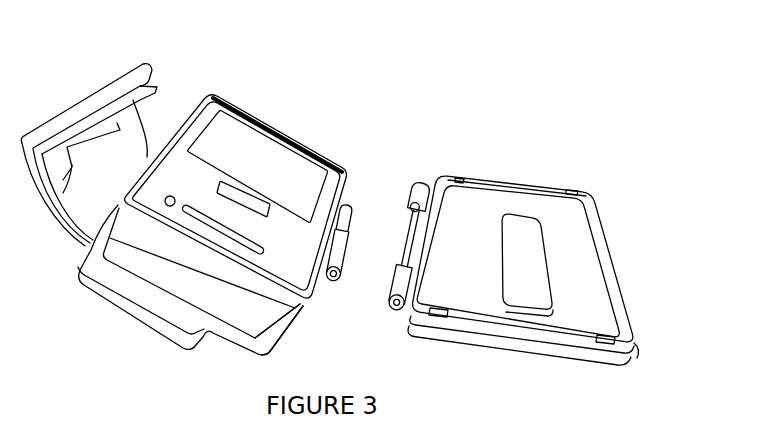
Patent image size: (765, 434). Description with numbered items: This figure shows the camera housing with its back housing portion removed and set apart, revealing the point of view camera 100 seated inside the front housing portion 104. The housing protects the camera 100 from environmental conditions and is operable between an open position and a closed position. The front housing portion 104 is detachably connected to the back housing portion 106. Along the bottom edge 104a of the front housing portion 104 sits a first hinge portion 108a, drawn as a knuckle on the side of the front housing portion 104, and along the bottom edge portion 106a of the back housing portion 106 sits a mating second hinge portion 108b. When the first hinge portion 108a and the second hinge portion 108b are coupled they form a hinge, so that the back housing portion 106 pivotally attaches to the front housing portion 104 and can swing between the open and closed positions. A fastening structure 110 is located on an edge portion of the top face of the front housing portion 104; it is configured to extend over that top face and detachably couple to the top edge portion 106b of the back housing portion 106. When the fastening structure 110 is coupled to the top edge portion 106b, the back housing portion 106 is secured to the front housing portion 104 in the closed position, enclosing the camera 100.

The point of view (POV) camera 100 is at (303, 248).
The front housing portion 104 is at (237, 312).
The bottom edge of the front housing portion 104a is at (293, 307).
The back housing portion 106 is at (570, 217).
The bottom edge portion of the back housing portion 106a is at (410, 310).
The top edge portion of the back housing portion 106b is at (638, 344).
The first hinge portion 108a is at (345, 217).
The second hinge portion 108b is at (423, 183).
The fastening structure 110 is at (103, 97).